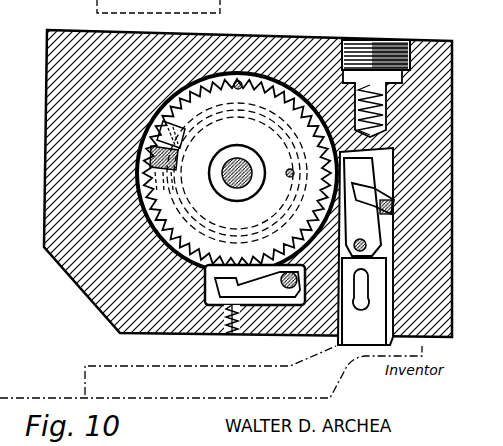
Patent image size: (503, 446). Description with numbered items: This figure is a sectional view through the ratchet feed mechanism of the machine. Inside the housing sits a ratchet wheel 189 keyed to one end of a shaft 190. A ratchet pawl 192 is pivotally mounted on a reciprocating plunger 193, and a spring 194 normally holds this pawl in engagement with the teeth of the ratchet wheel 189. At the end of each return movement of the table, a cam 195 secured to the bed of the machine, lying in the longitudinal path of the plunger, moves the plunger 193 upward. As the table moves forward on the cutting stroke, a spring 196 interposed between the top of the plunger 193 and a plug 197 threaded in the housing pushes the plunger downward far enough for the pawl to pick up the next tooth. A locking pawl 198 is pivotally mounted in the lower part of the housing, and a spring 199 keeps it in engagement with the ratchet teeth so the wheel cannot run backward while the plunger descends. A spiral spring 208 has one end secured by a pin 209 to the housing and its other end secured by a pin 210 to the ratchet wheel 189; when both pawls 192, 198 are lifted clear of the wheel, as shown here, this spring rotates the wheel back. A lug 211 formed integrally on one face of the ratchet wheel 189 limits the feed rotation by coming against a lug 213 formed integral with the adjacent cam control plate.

The ratchet wheel 189 is at (333, 40).
The shaft 190 is at (240, 165).
The ratchet pawl 192 is at (372, 238).
The reciprocating plunger 193 is at (388, 270).
The spring 194 is at (393, 202).
The cam 195 is at (336, 342).
The spring 196 is at (418, 55).
The plug 197 is at (374, 45).
The locking pawl 198 is at (226, 276).
The spring 199 is at (215, 322).
The spiral spring 208 is at (270, 103).
The pin 209 is at (236, 82).
The pin 210 is at (289, 169).
The lug 211 is at (184, 138).
The lug 213 is at (177, 166).